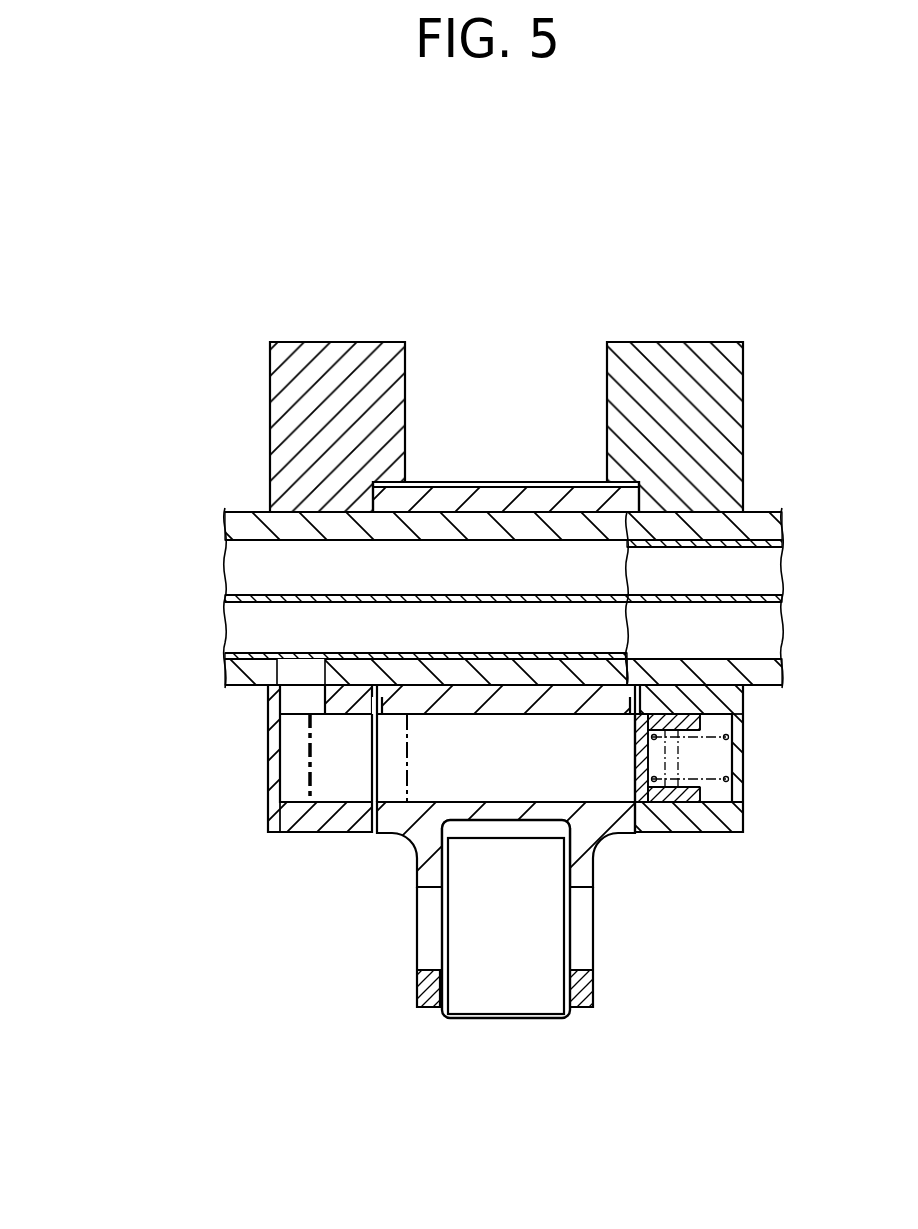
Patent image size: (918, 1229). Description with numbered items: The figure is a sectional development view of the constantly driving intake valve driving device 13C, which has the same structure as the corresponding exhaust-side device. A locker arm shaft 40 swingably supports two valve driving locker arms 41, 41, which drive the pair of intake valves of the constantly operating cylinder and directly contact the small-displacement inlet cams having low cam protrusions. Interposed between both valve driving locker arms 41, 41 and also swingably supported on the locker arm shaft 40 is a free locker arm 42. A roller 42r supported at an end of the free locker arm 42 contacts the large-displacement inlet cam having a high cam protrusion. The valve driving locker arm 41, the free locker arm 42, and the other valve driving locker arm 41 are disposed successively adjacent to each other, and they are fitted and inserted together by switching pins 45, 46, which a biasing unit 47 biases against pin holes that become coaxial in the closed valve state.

The constantly driving intake valve driving device 13C is at (240, 363).
The locker arm shaft 40 is at (240, 512).
The valve driving locker arm 41 is at (340, 342).
The free locker arm 42 is at (509, 482).
The roller 42r is at (503, 1020).
The switching pin 45 is at (335, 788).
The switching pin 46 is at (463, 763).
The biasing unit 47 is at (683, 804).